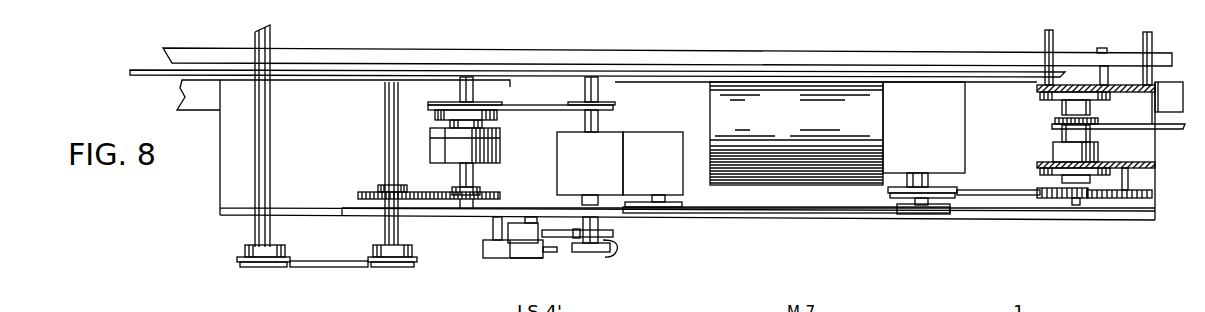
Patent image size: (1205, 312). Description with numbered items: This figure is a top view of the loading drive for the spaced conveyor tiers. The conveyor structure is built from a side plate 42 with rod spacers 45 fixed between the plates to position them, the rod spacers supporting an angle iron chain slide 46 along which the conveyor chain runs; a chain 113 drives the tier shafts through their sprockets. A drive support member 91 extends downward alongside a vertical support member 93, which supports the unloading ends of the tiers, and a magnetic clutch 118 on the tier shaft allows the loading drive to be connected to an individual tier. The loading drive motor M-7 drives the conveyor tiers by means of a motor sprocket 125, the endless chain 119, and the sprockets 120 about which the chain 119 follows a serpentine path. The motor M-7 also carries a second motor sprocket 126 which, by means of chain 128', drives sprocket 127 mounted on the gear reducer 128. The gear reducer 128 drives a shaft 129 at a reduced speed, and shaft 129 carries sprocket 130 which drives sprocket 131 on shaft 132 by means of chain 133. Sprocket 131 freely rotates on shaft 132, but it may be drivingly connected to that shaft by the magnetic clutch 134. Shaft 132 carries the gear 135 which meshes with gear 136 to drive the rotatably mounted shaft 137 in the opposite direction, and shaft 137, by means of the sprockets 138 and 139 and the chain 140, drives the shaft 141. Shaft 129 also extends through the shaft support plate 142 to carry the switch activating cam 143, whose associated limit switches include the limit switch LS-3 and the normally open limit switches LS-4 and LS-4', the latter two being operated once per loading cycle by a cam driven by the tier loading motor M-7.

The side plate 42 is at (870, 72).
The angle iron chain slide 46 is at (952, 53).
The rod spacer 45 is at (1053, 42).
The chain 113 is at (1150, 128).
The vertical support member 93 is at (1150, 128).
The drive support member 91 is at (1177, 175).
The magnetic clutch 118 is at (1053, 153).
The endless chain 119 is at (1008, 190).
The sprocket 120 is at (1055, 198).
The motor sprocket 125 is at (932, 140).
The motor sprocket 126 is at (913, 215).
The gear reducer 128 is at (620, 156).
The chain 128' is at (786, 227).
The sprocket 127 is at (682, 218).
The loading drive motor M-7 is at (710, 107).
The shaft 129 is at (610, 255).
The switch activating cam 143 is at (613, 232).
The limit switch LS-3 is at (548, 203).
The limit switch LS-4 is at (487, 240).
The limit switch LS-4' is at (524, 271).
The sprocket 130 is at (607, 102).
The sprocket 131 is at (483, 100).
The shaft 132 is at (460, 97).
The chain 133 is at (550, 104).
The magnetic clutch 134 is at (500, 153).
The gear 135 is at (485, 193).
The gear 136 is at (365, 193).
The shaft 137 is at (385, 117).
The sprocket 138 is at (413, 265).
The sprocket 139 is at (273, 268).
The chain 140 is at (328, 267).
The shaft 141 is at (255, 232).
The shaft support plate 142 is at (363, 220).